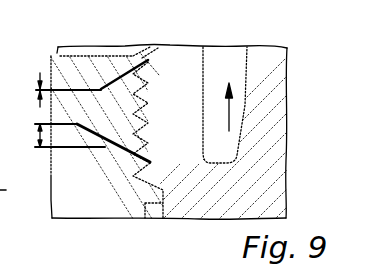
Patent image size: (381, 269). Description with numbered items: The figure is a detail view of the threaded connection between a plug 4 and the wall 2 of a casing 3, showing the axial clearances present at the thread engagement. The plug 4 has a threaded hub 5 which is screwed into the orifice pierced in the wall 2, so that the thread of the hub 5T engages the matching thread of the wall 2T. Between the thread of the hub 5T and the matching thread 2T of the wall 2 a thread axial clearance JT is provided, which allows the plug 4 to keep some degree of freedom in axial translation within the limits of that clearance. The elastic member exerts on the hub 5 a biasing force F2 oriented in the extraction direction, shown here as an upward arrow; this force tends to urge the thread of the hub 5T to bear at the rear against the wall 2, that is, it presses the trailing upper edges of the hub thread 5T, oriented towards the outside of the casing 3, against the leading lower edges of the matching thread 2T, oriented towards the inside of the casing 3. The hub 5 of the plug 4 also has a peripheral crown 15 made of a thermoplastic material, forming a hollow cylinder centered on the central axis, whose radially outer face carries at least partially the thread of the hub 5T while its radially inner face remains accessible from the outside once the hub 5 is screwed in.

The casing 3 is at (124, 117).
The wall 2 is at (85, 66).
The matching thread of the wall 2T is at (136, 63).
The thread of the hub 5T is at (145, 51).
The thread axial clearance JT is at (77, 142).
The threaded hub 5 is at (216, 130).
The plug 4 is at (272, 158).
The peripheral crown 15 is at (191, 88).
The biasing force F2 is at (229, 108).